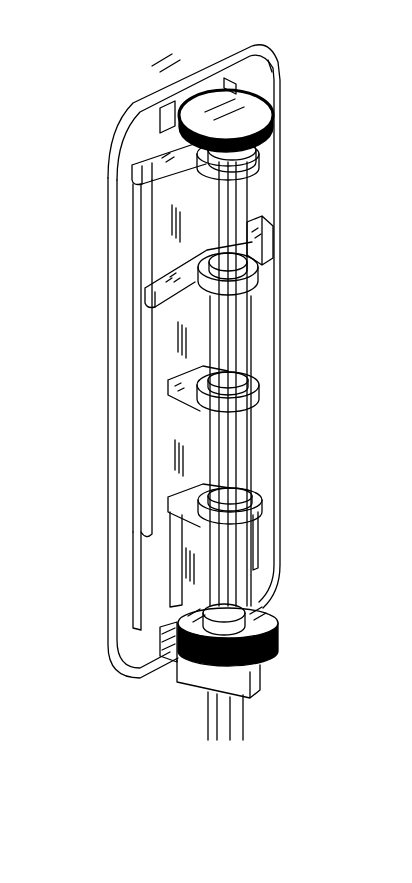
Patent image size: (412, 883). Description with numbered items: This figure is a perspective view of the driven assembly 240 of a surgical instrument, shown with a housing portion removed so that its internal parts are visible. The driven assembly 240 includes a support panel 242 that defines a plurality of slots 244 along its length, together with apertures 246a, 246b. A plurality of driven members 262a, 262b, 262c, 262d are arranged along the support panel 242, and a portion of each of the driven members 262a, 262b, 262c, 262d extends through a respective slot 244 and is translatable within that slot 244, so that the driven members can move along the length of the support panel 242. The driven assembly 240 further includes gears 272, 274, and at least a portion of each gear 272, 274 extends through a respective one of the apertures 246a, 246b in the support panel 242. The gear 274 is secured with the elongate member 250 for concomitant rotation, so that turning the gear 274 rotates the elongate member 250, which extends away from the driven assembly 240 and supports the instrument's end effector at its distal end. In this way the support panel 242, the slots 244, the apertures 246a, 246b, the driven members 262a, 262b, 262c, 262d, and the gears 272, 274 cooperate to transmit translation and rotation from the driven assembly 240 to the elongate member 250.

The driven assembly 240 is at (292, 221).
The support panel 242 is at (271, 495).
The slot 244 is at (150, 582).
The aperture 246a is at (234, 85).
The aperture 246b is at (170, 643).
The elongate member 250 is at (235, 720).
The driven member 262a is at (147, 347).
The driven member 262b is at (275, 245).
The driven member 262c is at (185, 383).
The driven member 262d is at (183, 505).
The gear 272 is at (200, 107).
The gear 274 is at (160, 628).